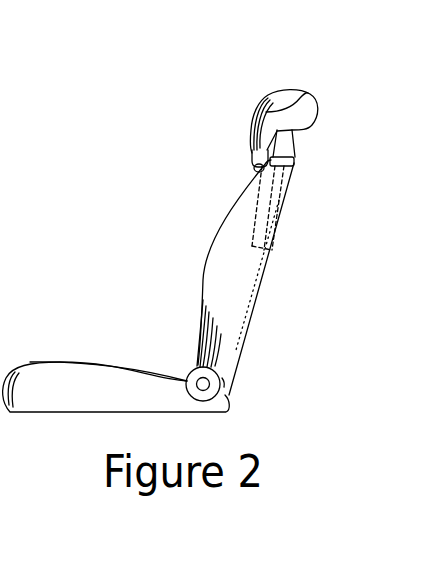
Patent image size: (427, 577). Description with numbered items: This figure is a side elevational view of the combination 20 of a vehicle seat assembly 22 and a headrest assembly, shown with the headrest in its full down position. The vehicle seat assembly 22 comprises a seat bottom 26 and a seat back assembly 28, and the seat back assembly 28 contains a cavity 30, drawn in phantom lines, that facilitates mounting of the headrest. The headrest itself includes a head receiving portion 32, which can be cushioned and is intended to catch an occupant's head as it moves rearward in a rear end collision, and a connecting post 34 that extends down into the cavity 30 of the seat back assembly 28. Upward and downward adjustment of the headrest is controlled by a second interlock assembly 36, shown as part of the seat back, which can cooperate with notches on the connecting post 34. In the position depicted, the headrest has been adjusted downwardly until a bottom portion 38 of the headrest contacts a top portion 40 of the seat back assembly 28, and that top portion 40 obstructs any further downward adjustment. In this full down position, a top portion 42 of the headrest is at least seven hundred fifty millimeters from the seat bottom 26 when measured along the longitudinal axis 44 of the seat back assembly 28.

The combination 20 is at (138, 122).
The vehicle seat assembly 22 is at (127, 278).
The seat bottom 26 is at (90, 390).
The seat back assembly 28 is at (220, 258).
The cavity 30 is at (273, 256).
The head receiving portion 32 is at (303, 120).
The connecting post 34 is at (296, 144).
The second interlock assembly 36 is at (295, 159).
The bottom portion 38 is at (252, 154).
The top portion 40 is at (255, 168).
The top portion 42 is at (270, 100).
The longitudinal axis 44 is at (270, 280).